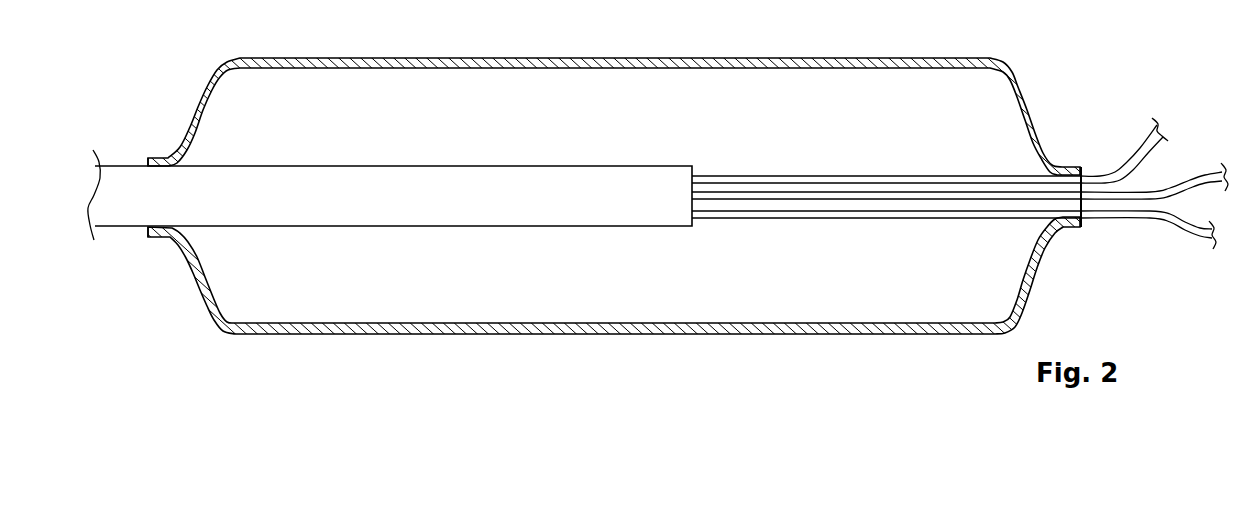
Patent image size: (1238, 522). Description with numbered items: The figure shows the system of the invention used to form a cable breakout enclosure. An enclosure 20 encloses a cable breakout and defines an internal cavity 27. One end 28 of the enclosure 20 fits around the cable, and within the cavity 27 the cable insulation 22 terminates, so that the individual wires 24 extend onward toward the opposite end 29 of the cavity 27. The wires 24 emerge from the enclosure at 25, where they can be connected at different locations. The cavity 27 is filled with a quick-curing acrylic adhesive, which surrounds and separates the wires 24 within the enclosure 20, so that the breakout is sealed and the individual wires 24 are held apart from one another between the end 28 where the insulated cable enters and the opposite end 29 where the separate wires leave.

The enclosure 20 is at (246, 58).
The cable insulation 22 is at (366, 217).
The wires 24 is at (810, 200).
The emerging wires 25 is at (1135, 150).
The cavity 27 is at (570, 130).
The one end 28 is at (172, 234).
The opposite end 29 is at (1071, 228).